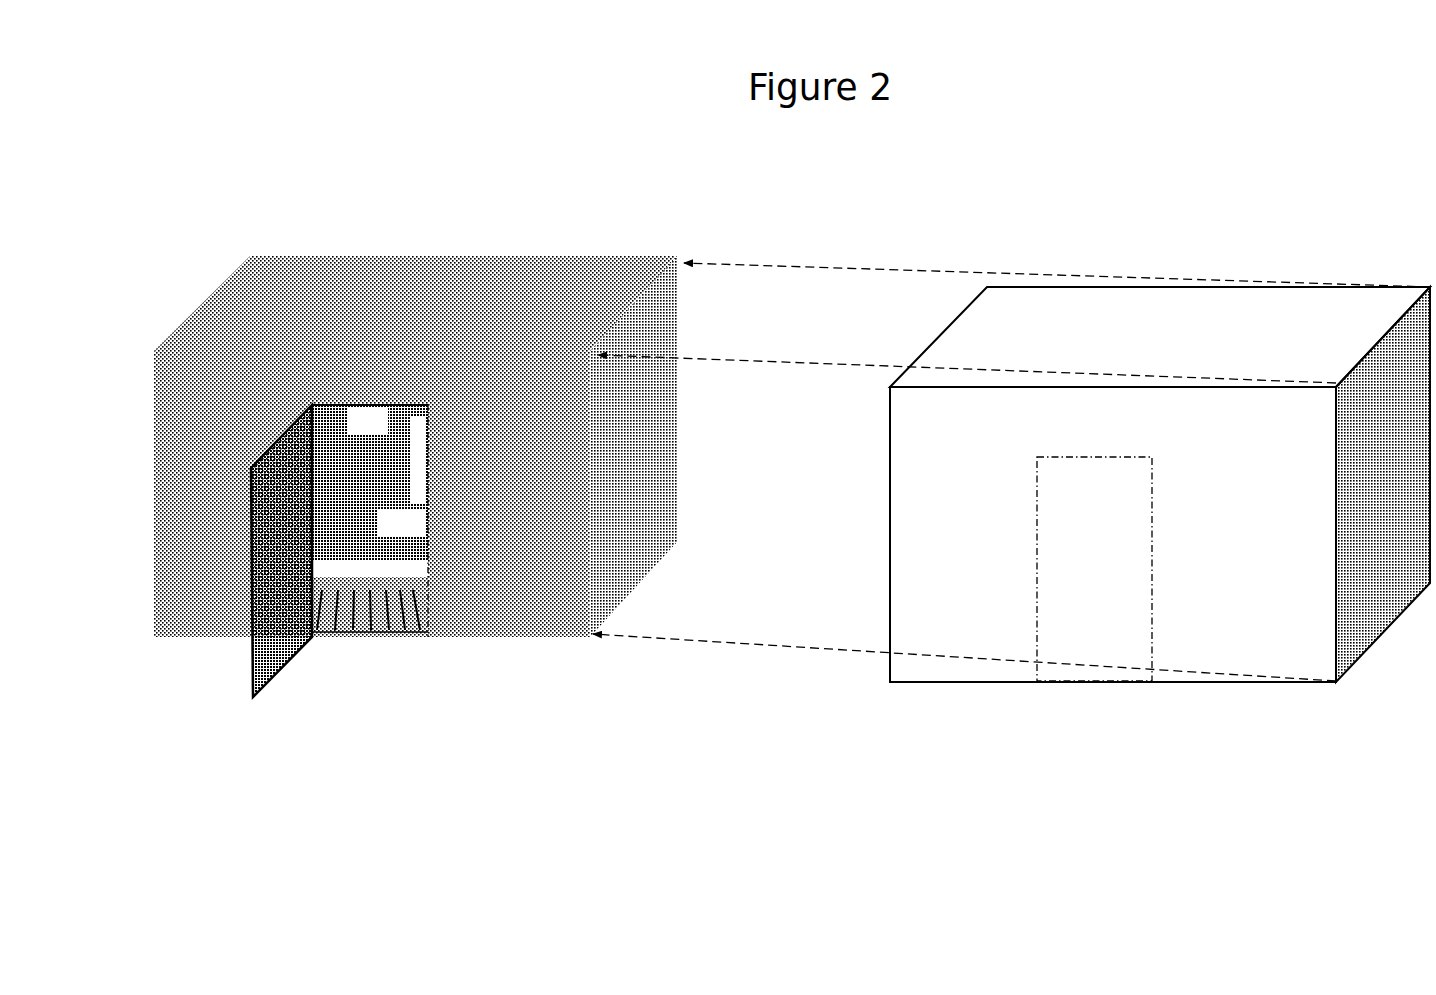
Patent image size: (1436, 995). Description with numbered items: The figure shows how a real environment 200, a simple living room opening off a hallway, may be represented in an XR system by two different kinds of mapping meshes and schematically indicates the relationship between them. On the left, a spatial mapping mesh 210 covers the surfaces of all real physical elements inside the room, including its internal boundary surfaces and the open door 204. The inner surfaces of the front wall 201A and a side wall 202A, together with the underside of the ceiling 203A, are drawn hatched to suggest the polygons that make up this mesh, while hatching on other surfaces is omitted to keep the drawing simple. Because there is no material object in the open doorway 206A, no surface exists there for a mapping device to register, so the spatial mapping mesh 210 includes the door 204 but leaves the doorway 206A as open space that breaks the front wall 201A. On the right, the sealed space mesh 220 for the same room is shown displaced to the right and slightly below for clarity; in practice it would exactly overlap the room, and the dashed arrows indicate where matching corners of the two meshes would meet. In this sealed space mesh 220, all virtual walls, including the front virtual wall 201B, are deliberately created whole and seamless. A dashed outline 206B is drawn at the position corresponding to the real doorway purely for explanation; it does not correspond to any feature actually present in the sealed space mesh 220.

The spatial mapping mesh 210 is at (202, 248).
The environment 200 is at (253, 258).
The ceiling 203A is at (590, 277).
The front wall 201A is at (208, 548).
The wall 202A is at (663, 387).
The door 204 is at (252, 655).
The open doorway 206A is at (427, 522).
The sealed space mesh 220 is at (1262, 248).
The virtual wall 201B is at (920, 478).
The dashed outline 206B is at (1152, 603).